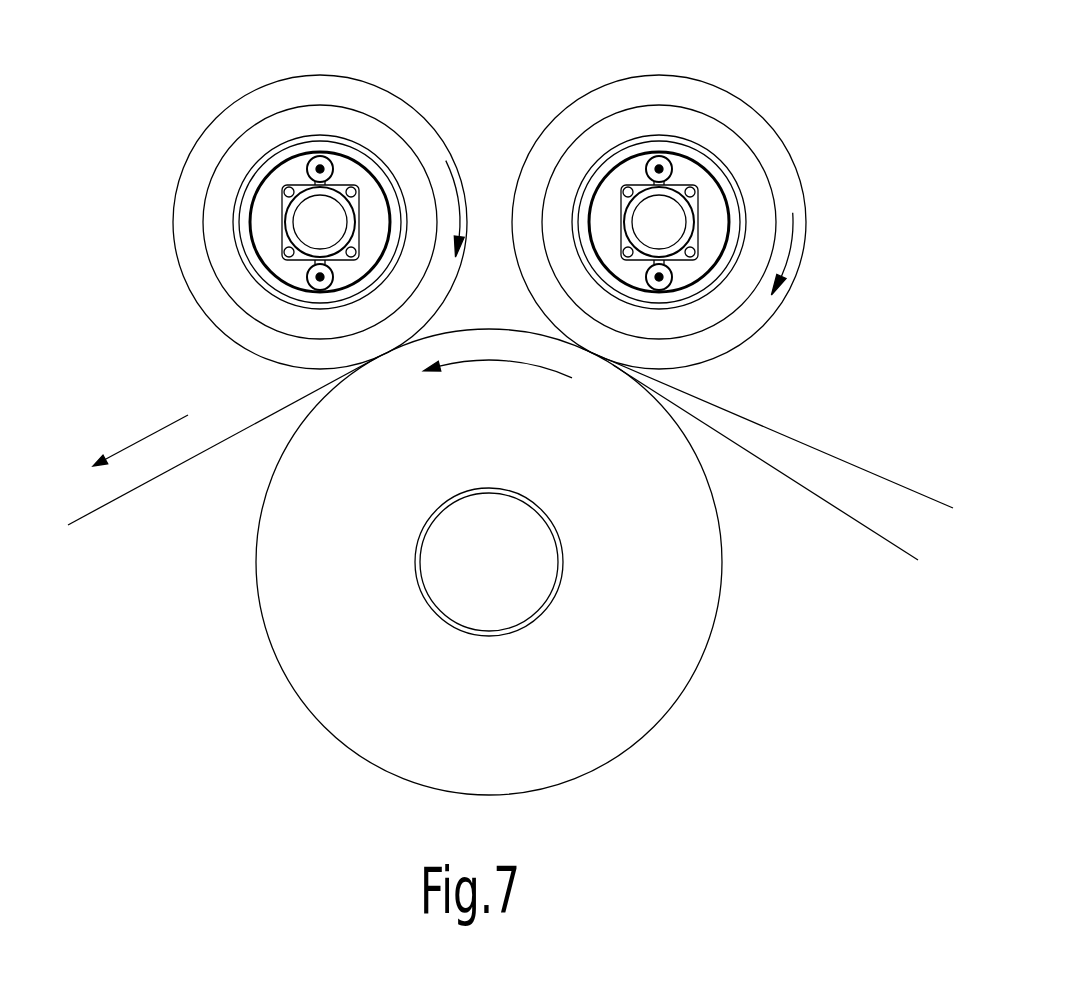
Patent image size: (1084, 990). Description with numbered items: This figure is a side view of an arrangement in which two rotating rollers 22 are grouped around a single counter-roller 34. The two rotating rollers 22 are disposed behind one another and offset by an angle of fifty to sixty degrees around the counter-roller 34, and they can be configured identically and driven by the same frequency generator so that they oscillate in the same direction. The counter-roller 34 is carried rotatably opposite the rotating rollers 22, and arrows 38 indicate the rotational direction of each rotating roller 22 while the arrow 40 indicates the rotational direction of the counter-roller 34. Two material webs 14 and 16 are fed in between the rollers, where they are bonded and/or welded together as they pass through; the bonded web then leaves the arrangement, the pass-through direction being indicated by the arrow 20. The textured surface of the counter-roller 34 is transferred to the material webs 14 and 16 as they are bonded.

The material web 14 is at (890, 478).
The material web 16 is at (880, 537).
The arrow indicating pass-through direction 20 is at (139, 440).
The rotating roller 22 is at (373, 93).
The counter-roller 34 is at (608, 725).
The arrow indicating rotational direction of rotating roller 38 is at (452, 170).
The arrow indicating rotational direction of counter-roller 40 is at (524, 369).